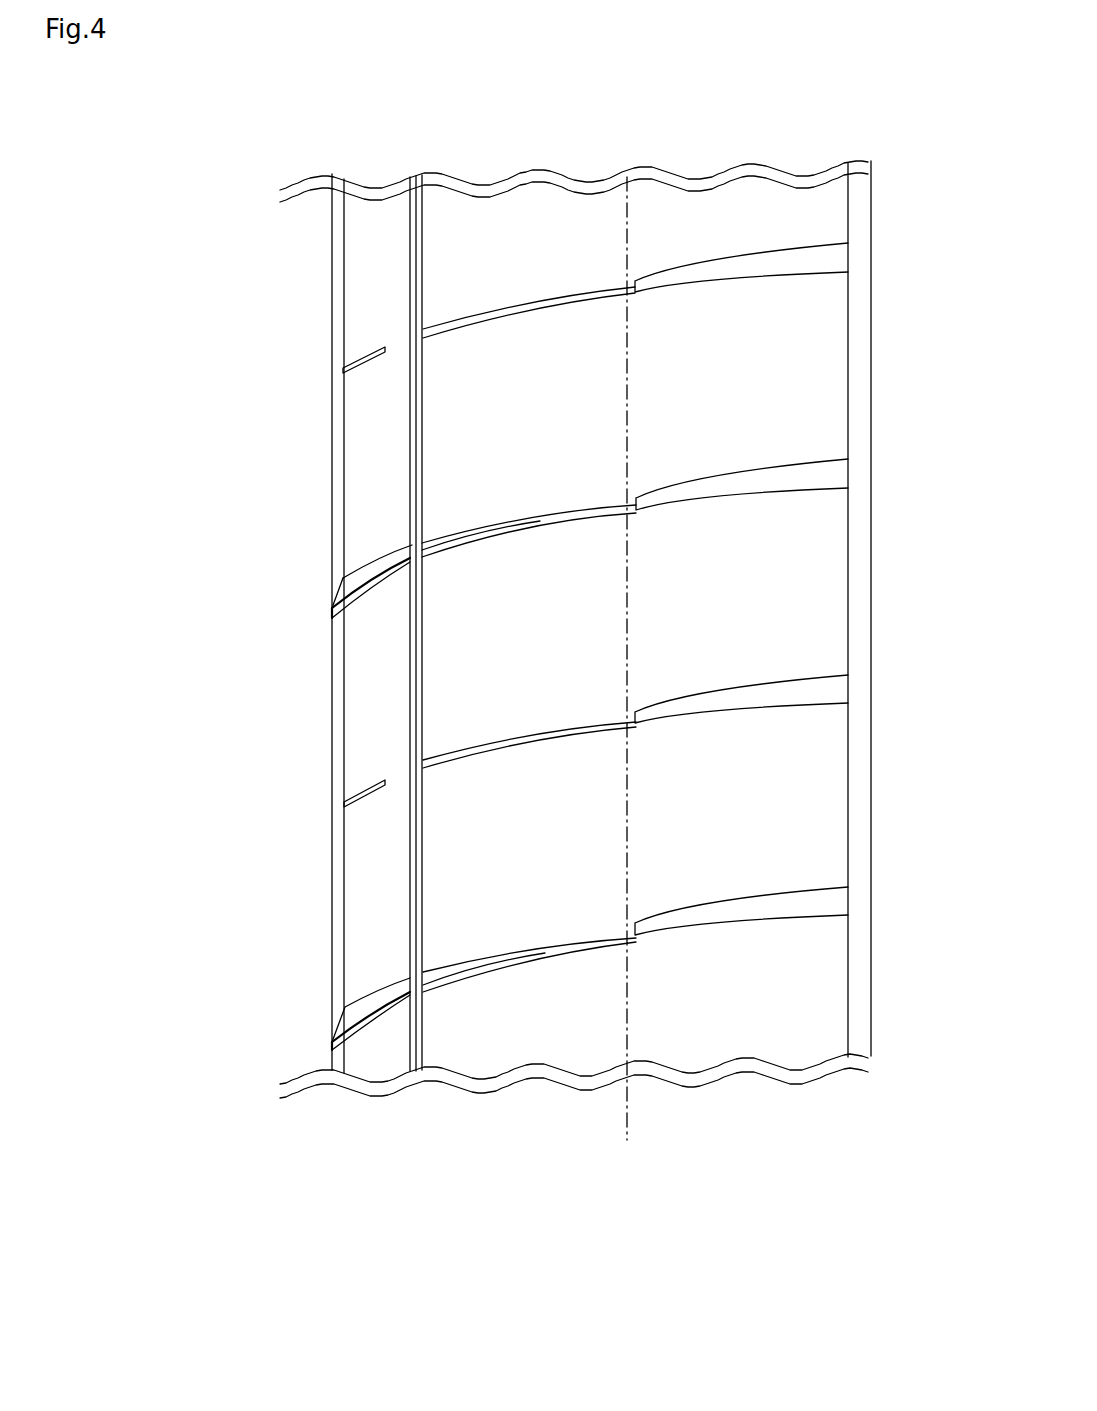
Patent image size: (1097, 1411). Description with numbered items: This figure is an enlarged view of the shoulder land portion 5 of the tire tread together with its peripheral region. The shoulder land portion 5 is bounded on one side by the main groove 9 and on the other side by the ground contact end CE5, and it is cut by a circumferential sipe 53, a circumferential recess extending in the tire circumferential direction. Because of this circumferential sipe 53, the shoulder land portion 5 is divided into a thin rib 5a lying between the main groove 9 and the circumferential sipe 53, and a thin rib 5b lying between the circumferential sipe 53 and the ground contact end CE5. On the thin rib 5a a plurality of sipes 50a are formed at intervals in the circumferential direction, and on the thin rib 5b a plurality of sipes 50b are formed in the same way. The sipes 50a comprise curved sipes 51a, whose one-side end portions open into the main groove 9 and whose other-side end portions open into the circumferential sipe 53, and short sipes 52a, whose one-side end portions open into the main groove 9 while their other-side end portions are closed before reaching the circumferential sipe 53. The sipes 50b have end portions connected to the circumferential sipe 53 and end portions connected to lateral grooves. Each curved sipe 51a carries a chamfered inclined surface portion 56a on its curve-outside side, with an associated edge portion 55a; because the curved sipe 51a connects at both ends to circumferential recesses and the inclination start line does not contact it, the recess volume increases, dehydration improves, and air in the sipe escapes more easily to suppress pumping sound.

The main groove 9 is at (317, 197).
The shoulder land portion 5 is at (333, 172).
The thin rib 5a is at (407, 1080).
The thin rib 5b is at (614, 1100).
The circumferential sipe 53 is at (462, 250).
The sipes 50a is at (280, 698).
The curved sipe 51a is at (280, 741).
The short sipe 52a is at (363, 788).
The sipes 50b is at (455, 540).
The blade top edge 55a is at (375, 557).
The chamfered inclined surface portion 56a is at (360, 575).
The ground contact end CE5 is at (655, 1155).